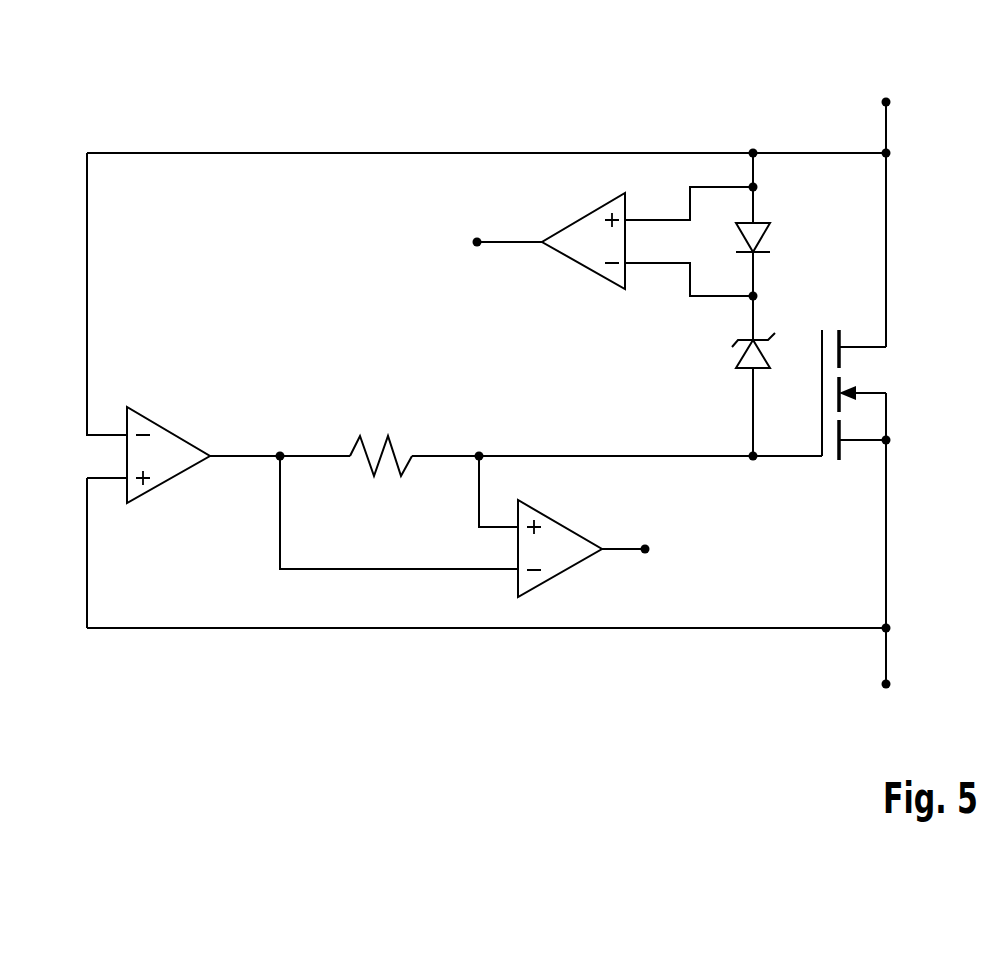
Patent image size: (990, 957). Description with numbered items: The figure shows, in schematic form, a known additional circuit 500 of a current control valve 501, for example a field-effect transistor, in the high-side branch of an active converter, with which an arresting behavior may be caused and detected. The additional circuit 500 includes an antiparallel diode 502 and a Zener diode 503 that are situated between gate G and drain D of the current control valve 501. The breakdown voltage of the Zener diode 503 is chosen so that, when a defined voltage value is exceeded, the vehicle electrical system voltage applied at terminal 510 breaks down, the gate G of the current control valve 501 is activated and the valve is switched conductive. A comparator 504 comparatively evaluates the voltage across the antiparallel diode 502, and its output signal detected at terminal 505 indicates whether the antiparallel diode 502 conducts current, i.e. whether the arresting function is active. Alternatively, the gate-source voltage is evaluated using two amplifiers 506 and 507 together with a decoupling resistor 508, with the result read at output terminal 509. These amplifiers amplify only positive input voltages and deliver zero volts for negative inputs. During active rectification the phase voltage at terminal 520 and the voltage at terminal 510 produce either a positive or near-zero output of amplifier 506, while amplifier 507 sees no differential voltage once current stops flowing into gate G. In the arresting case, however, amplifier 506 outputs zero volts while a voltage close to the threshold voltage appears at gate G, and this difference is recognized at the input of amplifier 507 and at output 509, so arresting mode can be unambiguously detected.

The additional circuit 500 is at (598, 672).
The current control valve 501 is at (866, 333).
The antiparallel diode 502 is at (782, 233).
The Zener diode 503 is at (724, 360).
The comparator 504 is at (580, 268).
The terminal 505 is at (477, 246).
The amplifier 506 is at (184, 410).
The amplifier 507 is at (580, 514).
The decoupling resistor 508 is at (372, 426).
The terminal 509 is at (646, 553).
The DC voltage terminal 510 is at (890, 102).
The phase voltage terminal 520 is at (890, 684).